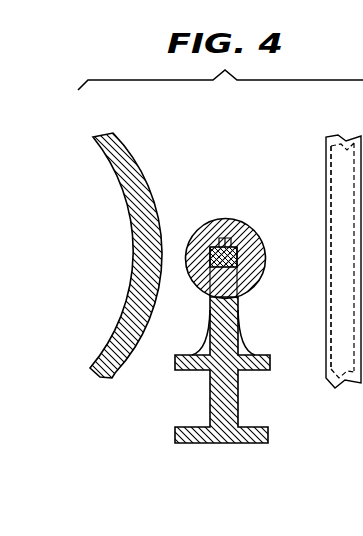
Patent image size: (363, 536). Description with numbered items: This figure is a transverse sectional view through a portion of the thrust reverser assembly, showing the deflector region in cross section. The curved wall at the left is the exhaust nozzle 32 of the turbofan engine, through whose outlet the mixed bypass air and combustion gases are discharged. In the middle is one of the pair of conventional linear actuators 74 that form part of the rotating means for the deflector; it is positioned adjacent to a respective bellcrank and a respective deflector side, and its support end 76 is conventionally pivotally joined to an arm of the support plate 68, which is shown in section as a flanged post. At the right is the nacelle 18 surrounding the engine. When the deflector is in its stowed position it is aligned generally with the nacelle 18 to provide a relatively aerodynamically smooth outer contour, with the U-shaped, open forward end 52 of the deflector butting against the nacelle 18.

The exhaust nozzle 32 is at (133, 161).
The linear actuator 74 is at (223, 221).
The support end 76 is at (205, 225).
The support plate 68 is at (256, 392).
The nacelle 18 is at (323, 152).
The forward end 52 is at (322, 322).